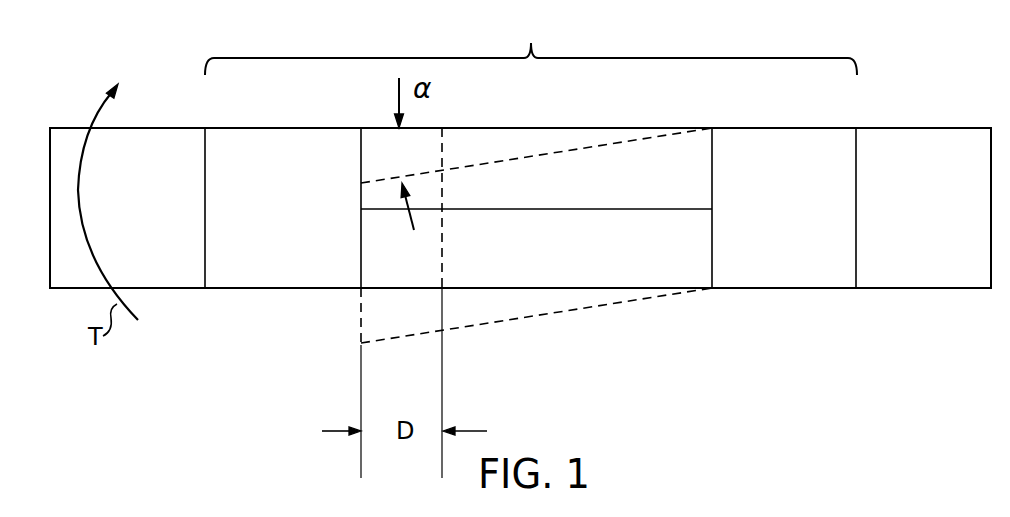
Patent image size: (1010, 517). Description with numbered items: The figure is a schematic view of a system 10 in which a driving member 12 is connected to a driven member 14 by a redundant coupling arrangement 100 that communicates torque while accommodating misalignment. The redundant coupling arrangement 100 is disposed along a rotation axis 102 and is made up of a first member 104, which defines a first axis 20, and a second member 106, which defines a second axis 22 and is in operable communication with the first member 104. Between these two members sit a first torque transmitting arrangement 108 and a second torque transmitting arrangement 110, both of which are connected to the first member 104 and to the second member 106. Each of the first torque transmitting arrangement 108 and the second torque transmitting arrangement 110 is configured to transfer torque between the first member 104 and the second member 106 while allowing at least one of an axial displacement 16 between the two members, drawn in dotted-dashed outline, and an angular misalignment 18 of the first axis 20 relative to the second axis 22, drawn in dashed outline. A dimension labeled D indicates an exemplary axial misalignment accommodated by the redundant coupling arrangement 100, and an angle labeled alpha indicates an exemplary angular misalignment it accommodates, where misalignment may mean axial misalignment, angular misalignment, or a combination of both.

The system 10 is at (178, 402).
The driving member 12 is at (148, 217).
The driven member 14 is at (931, 217).
The axial displacement 16 is at (441, 257).
The angular misalignment 18 is at (495, 327).
The first axis 20 is at (230, 208).
The second axis 22 is at (737, 208).
The redundant coupling arrangement 100 is at (531, 41).
The rotation axis 102 is at (632, 209).
The first member 104 is at (303, 253).
The second member 106 is at (804, 254).
The first torque transmitting arrangement 108 is at (522, 252).
The second torque transmitting arrangement 110 is at (576, 252).